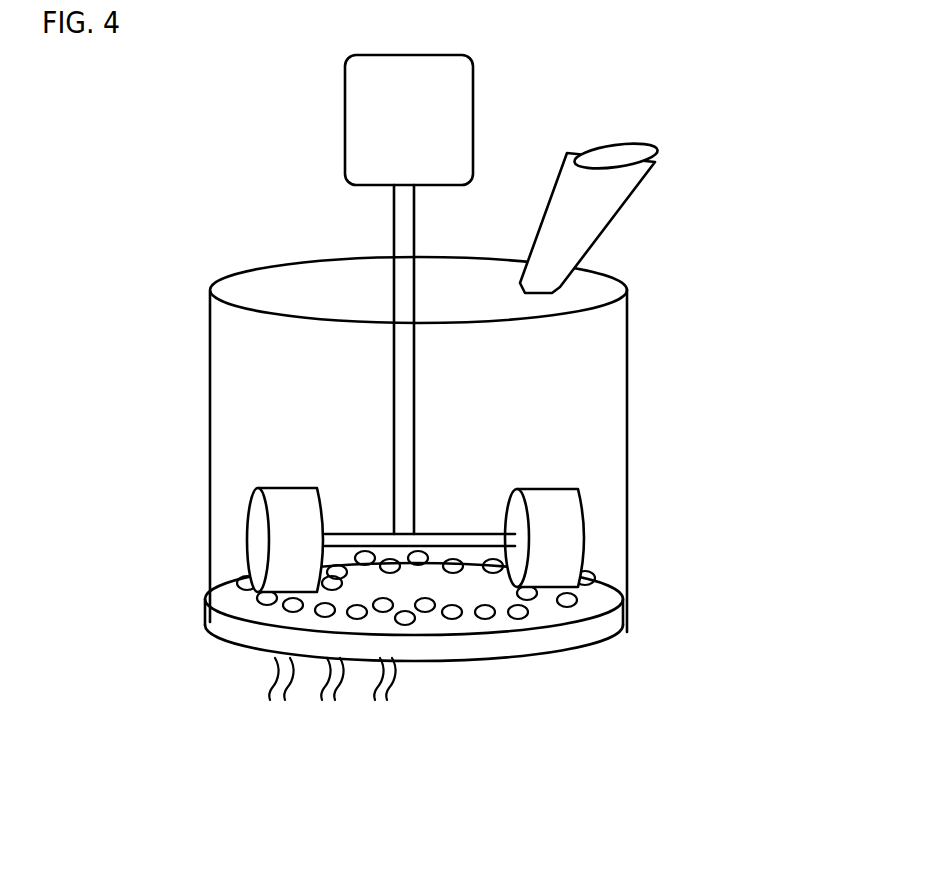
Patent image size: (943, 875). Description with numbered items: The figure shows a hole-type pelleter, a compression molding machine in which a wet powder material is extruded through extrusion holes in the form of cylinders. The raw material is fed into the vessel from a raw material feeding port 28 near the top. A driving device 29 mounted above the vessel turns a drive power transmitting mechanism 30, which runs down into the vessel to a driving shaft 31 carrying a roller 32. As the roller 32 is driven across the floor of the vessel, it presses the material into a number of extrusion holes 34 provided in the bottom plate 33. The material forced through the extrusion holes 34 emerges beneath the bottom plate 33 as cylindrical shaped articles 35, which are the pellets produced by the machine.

The raw material feeding port 28 is at (603, 192).
The driving device 29 is at (372, 102).
The drive power transmitting mechanism 30 is at (400, 235).
The driving shaft 31 is at (368, 532).
The roller 32 is at (568, 528).
The bottom plate 33 is at (580, 650).
The extrusion holes 34 is at (407, 625).
The shaped articles 35 is at (273, 698).